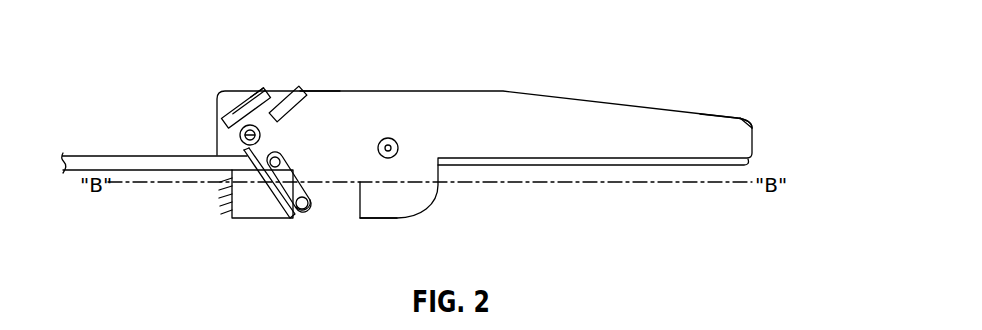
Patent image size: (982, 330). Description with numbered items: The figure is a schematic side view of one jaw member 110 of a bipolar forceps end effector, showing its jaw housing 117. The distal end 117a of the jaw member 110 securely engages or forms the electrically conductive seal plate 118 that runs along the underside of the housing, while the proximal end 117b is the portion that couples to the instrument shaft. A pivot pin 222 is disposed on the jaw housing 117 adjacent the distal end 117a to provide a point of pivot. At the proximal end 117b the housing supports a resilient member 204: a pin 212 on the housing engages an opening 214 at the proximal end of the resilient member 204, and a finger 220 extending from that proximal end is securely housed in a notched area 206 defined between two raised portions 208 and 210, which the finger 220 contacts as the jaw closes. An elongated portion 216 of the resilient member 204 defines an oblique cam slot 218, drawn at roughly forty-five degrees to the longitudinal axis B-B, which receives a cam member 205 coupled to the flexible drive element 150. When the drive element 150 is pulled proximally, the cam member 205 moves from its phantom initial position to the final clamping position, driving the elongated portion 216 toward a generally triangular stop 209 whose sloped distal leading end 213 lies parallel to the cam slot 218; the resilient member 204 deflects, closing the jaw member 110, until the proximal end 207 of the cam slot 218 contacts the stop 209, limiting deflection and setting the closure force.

The jaw member 110 is at (682, 43).
The jaw housing 117 is at (560, 97).
The distal end 117a is at (718, 117).
The proximal end 117b is at (318, 91).
The seal plate 118 is at (748, 163).
The drive element 150 is at (130, 155).
The resilient member 204 is at (240, 133).
The cam member 205 is at (278, 160).
The notched area 206 is at (247, 108).
The proximal end of the cam slot 207 is at (272, 190).
The raised portion 208 is at (239, 99).
The stop 209 is at (238, 197).
The raised portion 210 is at (295, 95).
The pin 212 is at (247, 136).
The distal leading end 213 is at (292, 218).
The opening 214 is at (246, 156).
The elongated portion 216 is at (397, 218).
The cam slot 218 is at (318, 208).
The finger 220 is at (257, 90).
The pivot pin 222 is at (390, 159).